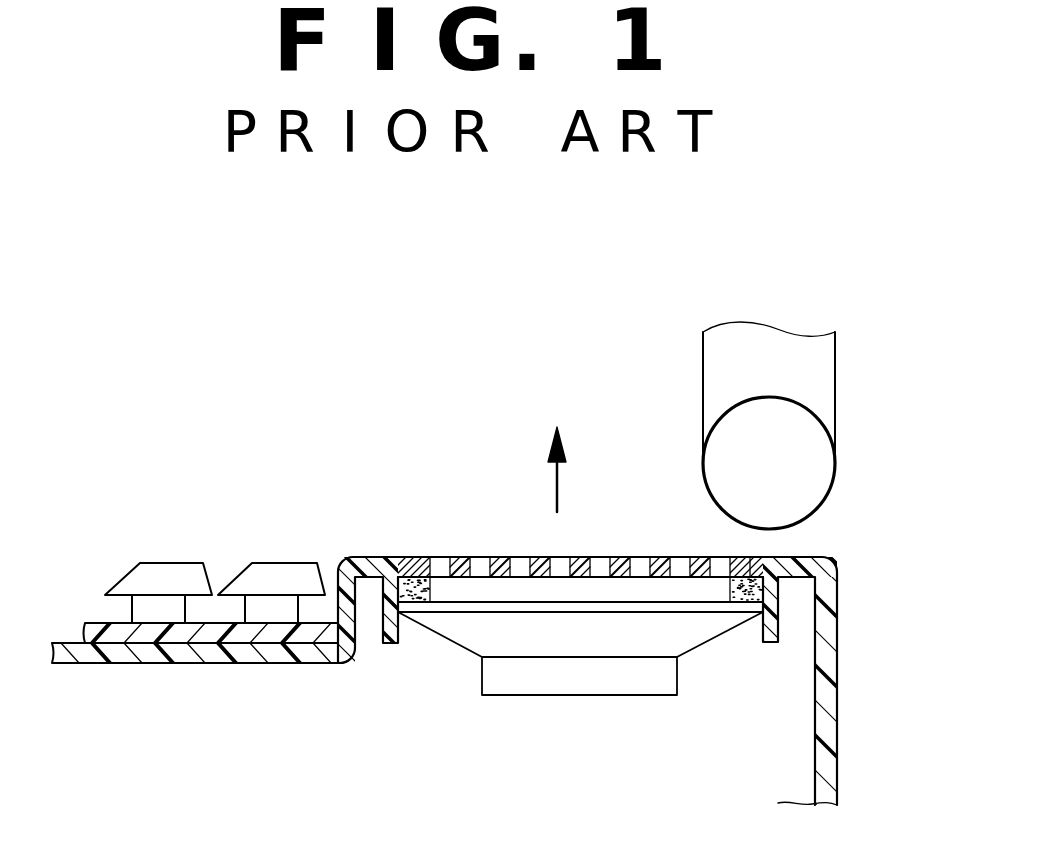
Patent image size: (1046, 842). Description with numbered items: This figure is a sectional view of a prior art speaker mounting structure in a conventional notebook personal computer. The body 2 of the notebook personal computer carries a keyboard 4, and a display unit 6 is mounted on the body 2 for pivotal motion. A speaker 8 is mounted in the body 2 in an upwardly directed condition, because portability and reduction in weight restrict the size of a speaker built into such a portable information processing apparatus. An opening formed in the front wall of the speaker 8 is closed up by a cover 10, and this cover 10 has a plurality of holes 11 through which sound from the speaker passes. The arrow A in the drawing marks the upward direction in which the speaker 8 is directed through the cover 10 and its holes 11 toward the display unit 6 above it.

The frame 2 is at (837, 670).
The electronic components 4 is at (272, 563).
The roller 6 is at (828, 383).
The speaker 8 is at (570, 690).
The panel 10 is at (617, 557).
The electrode layer 11 is at (478, 557).
The direction A is at (555, 483).